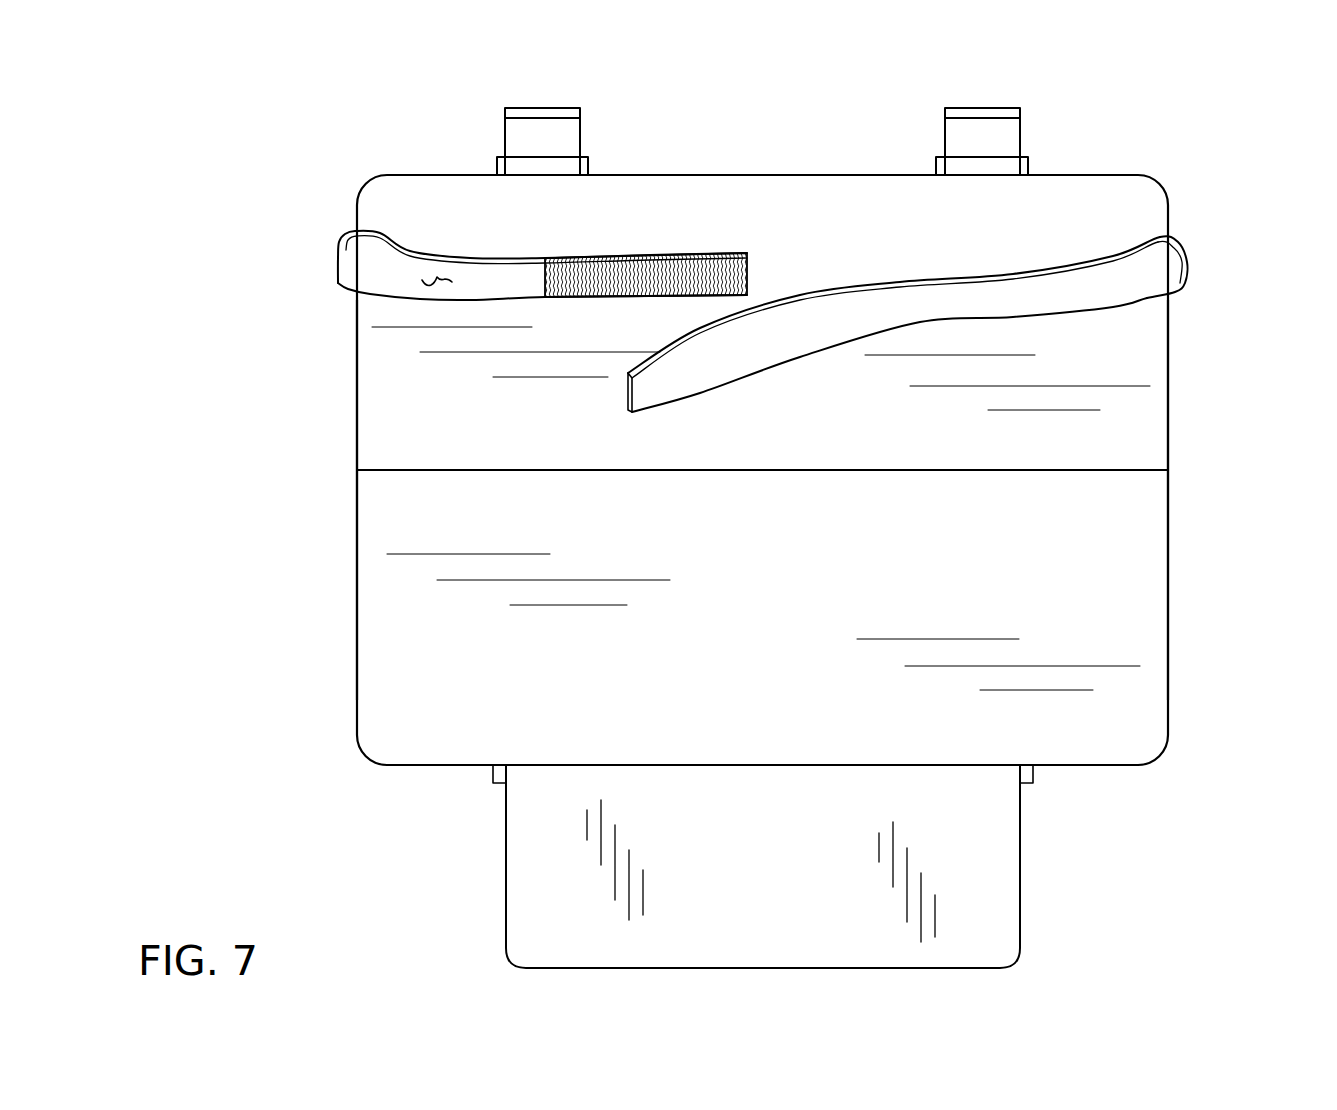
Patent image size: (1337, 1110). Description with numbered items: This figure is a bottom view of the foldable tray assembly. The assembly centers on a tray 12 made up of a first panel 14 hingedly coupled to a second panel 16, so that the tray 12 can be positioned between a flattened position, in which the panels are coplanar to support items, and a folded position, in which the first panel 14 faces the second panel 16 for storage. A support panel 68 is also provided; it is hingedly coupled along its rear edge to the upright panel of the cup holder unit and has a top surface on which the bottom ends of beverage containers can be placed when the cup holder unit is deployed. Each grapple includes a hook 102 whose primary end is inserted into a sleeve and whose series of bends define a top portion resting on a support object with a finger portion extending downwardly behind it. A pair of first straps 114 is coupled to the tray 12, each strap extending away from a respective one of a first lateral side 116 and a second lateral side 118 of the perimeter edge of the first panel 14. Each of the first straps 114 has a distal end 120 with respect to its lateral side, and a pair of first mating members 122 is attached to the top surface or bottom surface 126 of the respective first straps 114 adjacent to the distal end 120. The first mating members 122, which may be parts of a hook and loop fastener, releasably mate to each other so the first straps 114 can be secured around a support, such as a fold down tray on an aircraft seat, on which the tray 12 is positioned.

The tray 12 is at (885, 172).
The first panel 14 is at (1123, 398).
The second panel 16 is at (1117, 640).
The support panel 68 is at (993, 875).
The hook 102 is at (528, 107).
The first straps 114 is at (387, 280).
The first lateral side 116 is at (357, 428).
The second lateral side 118 is at (1168, 445).
The distal end 120 is at (748, 273).
The first mating members 122 is at (650, 272).
The bottom surface 126 is at (437, 277).